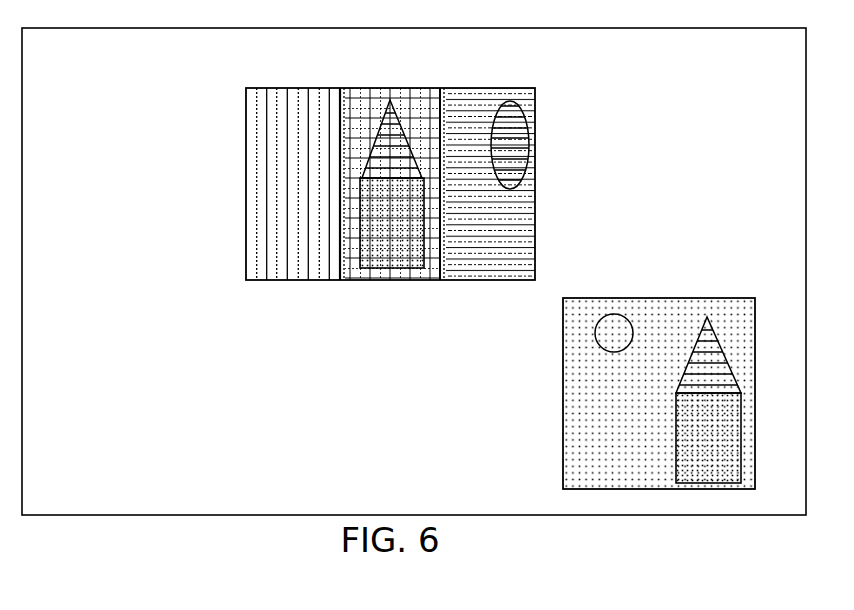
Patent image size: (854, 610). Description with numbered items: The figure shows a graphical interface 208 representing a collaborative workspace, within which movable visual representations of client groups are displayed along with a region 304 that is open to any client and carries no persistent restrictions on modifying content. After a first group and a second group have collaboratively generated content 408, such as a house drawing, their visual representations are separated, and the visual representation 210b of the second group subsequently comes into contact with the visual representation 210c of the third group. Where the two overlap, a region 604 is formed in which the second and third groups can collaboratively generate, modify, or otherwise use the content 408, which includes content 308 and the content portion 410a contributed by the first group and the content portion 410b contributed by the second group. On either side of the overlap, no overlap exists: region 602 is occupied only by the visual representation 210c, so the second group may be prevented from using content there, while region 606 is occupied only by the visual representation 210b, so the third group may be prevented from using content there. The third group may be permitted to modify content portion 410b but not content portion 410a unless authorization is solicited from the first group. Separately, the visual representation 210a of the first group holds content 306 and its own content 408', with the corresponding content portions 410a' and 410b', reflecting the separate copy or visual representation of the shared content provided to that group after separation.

The graphical interface 208 is at (720, 519).
The region 304 is at (285, 502).
The visual representation 210a is at (772, 322).
The visual representation 210b is at (555, 101).
The visual representation 210c is at (246, 85).
The content 306 is at (614, 329).
The content 308 is at (513, 142).
The content 408 is at (392, 163).
The content 408' is at (659, 377).
The content portion 410a is at (392, 246).
The content portion 410a' is at (739, 438).
The content portion 410b is at (399, 112).
The content portion 410b' is at (717, 329).
The region 602 is at (246, 282).
The region 604 is at (343, 282).
The region 606 is at (535, 282).